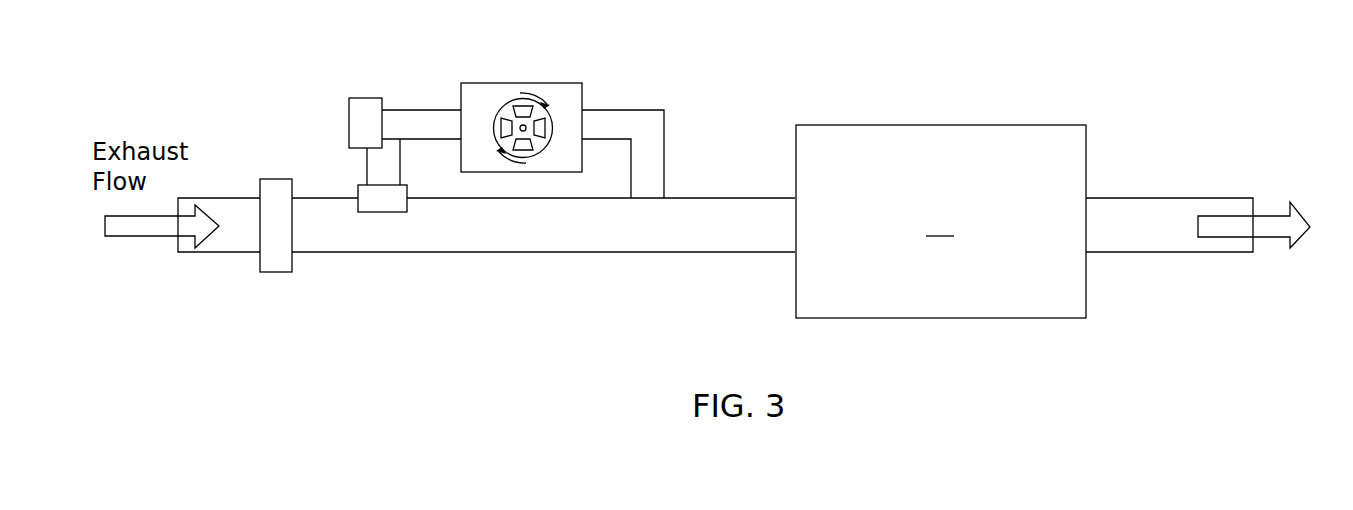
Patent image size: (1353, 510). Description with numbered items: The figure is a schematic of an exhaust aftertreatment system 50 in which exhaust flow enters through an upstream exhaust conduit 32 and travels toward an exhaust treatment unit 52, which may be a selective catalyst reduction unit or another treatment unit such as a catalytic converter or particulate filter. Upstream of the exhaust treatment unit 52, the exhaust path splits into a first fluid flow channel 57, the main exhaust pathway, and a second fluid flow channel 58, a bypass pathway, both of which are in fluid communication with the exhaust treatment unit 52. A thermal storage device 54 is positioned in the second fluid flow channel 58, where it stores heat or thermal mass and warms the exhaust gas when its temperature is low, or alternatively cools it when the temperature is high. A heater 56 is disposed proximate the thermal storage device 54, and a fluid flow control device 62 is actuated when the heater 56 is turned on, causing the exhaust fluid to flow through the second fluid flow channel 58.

The exhaust aftertreatment system 50 is at (818, 70).
The upstream exhaust conduit 32 is at (356, 265).
The exhaust treatment unit 52 is at (941, 221).
The thermal storage device 54 is at (508, 87).
The heater 56 is at (275, 262).
The first fluid flow channel 57 is at (516, 235).
The second fluid flow channel 58 is at (615, 117).
The fluid flow control device 62 is at (367, 190).